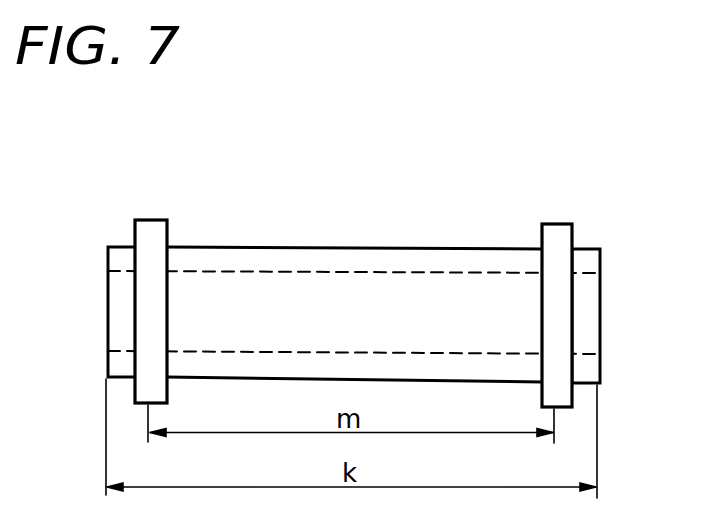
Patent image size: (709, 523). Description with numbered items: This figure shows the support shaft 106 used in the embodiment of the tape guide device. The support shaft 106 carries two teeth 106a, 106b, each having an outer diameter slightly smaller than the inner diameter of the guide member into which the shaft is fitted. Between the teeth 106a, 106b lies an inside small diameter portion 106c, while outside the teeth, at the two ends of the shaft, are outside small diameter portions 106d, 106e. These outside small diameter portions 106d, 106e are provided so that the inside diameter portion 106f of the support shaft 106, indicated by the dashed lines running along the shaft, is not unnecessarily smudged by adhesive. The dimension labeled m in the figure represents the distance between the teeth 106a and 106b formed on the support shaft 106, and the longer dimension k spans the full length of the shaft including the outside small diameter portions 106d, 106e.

The support shaft 106 is at (448, 195).
The tooth 106a is at (153, 220).
The tooth 106b is at (556, 223).
The inside small diameter portion 106c is at (248, 246).
The outside small diameter portion 106d is at (120, 246).
The outside small diameter portion 106e is at (582, 248).
The inside diameter portion 106f is at (575, 275).